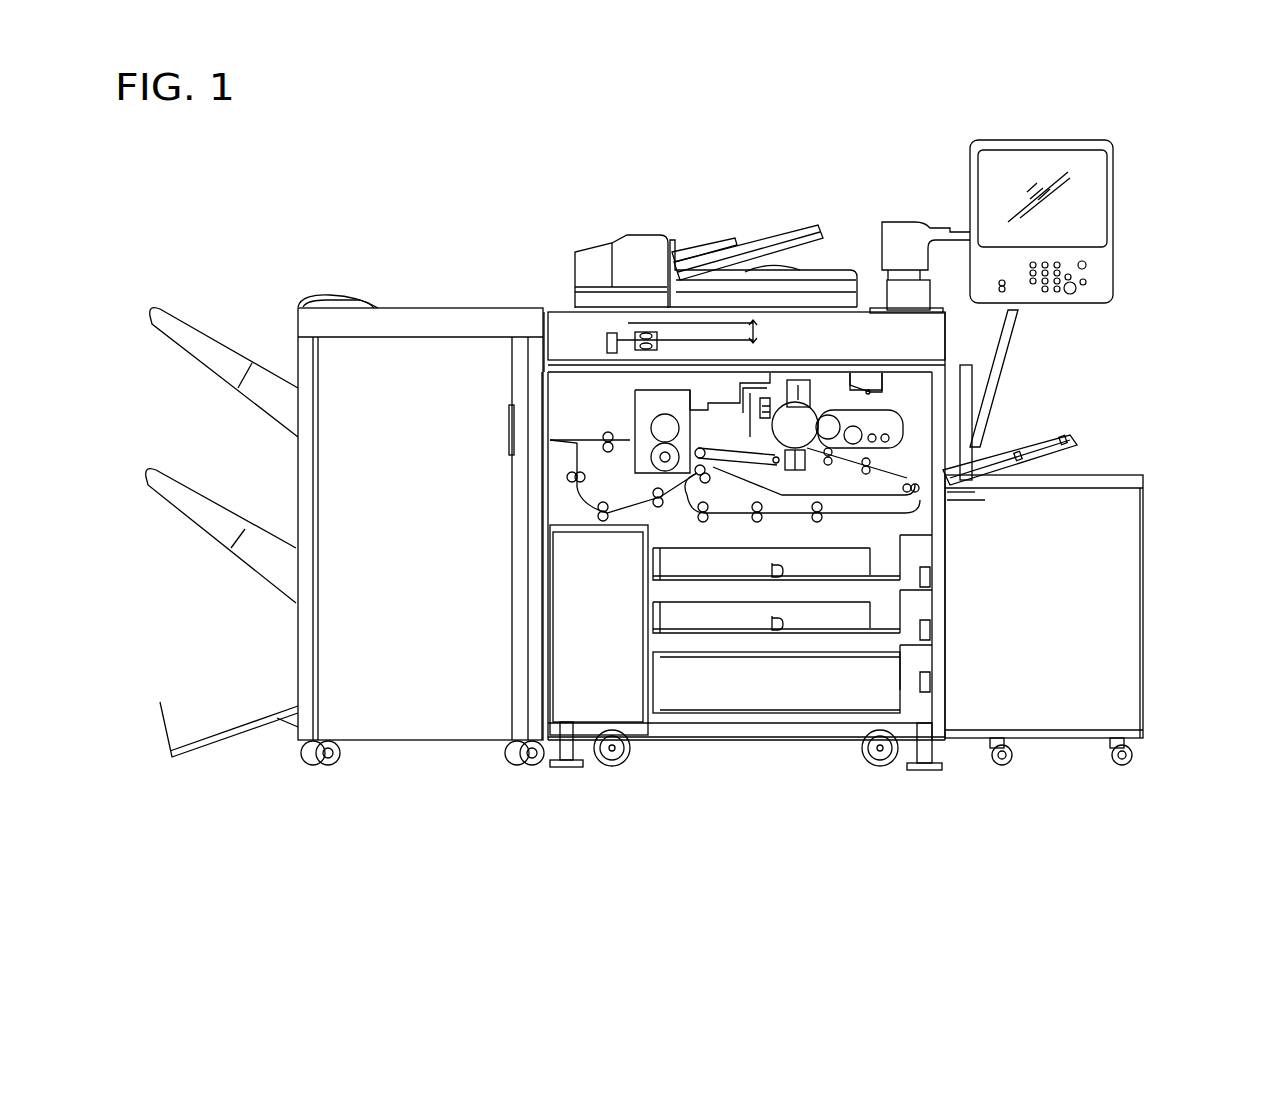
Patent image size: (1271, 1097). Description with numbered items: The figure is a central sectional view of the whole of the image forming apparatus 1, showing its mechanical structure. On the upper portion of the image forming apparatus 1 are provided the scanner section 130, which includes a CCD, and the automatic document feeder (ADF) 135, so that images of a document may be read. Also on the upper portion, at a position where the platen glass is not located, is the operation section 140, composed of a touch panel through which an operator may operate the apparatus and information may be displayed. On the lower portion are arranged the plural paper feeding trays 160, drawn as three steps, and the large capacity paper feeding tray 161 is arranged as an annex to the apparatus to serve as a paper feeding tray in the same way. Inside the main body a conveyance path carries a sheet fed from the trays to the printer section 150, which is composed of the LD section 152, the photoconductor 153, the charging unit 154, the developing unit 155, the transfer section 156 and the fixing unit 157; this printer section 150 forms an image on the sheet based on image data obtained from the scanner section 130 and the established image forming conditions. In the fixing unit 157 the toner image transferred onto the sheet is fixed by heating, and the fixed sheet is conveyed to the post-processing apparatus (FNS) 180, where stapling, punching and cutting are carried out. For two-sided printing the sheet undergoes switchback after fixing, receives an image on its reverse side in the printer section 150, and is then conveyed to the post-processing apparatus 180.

The image forming apparatus 1 is at (871, 801).
The scanner section 130 is at (1067, 322).
The automatic document feeder (ADF) 135 is at (747, 148).
The operation section 140 is at (1013, 122).
The printer section 150 is at (894, 576).
The LD section 152 is at (872, 389).
The photoconductor 153 is at (786, 462).
The charging unit 154 is at (798, 378).
The developing unit 155 is at (877, 449).
The transfer section 156 is at (807, 470).
The fixing unit 157 is at (680, 435).
The paper feeding trays (1-3) 160 is at (763, 778).
The large capacity paper feeding tray 161 is at (1057, 785).
The post-processing apparatus (FNS) 180 is at (443, 242).